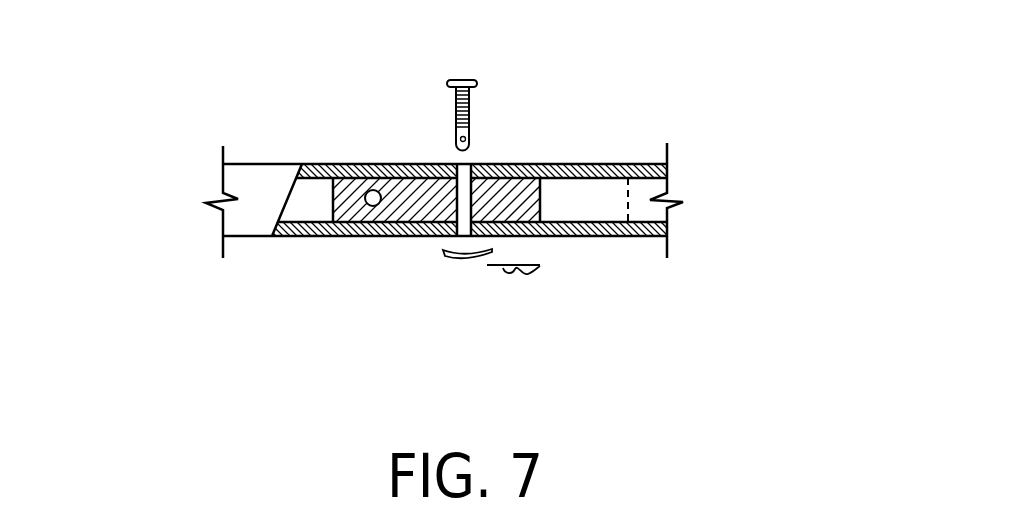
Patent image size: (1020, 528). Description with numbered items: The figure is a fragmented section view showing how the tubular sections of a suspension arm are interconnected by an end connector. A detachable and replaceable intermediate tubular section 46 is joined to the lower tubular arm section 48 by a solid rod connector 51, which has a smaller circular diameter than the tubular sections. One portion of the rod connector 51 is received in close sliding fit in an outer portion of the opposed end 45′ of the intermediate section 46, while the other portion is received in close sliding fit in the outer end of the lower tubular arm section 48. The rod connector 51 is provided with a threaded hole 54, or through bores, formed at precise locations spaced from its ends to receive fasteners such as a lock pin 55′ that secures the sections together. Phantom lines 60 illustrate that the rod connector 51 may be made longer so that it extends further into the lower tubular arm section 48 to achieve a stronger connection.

The intermediate tubular section 46 is at (269, 185).
The lower tubular arm section 48 is at (623, 165).
The solid rod connector 51 is at (413, 195).
The threaded hole 54 is at (373, 190).
The lock pin 55′ is at (470, 118).
The opposed end of the intermediate tubular arm 45′ is at (428, 237).
The phantom lines 60 is at (628, 186).